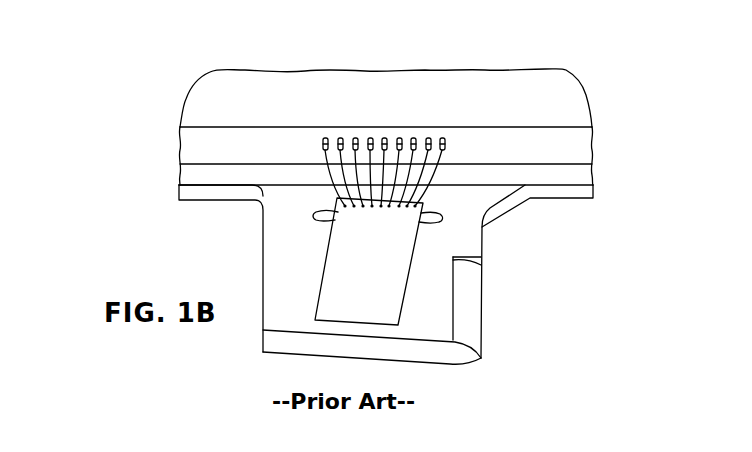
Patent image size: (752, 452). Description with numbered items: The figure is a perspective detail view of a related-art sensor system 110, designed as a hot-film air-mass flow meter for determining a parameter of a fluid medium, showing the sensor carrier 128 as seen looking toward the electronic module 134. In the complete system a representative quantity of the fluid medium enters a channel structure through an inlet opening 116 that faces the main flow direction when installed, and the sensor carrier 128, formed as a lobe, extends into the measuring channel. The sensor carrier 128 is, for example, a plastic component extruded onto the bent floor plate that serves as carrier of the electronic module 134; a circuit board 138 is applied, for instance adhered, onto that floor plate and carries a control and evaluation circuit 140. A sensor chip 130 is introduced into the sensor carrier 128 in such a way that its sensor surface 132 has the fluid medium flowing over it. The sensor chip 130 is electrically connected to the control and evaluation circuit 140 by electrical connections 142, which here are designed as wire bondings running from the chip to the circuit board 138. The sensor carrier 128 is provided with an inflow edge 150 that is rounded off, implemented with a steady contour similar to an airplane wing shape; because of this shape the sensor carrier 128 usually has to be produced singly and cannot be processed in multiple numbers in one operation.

The sensor system 110 is at (555, 48).
The inlet opening 116 is at (386, 92).
The sensor carrier 128 is at (445, 242).
The sensor chip 130 is at (309, 261).
The sensor surface 132 is at (343, 250).
The electronic module 134 is at (553, 102).
The circuit board 138 is at (327, 136).
The control and evaluation circuit 140 is at (213, 102).
The electrical connections 142 is at (391, 153).
The inflow edge 150 is at (481, 319).